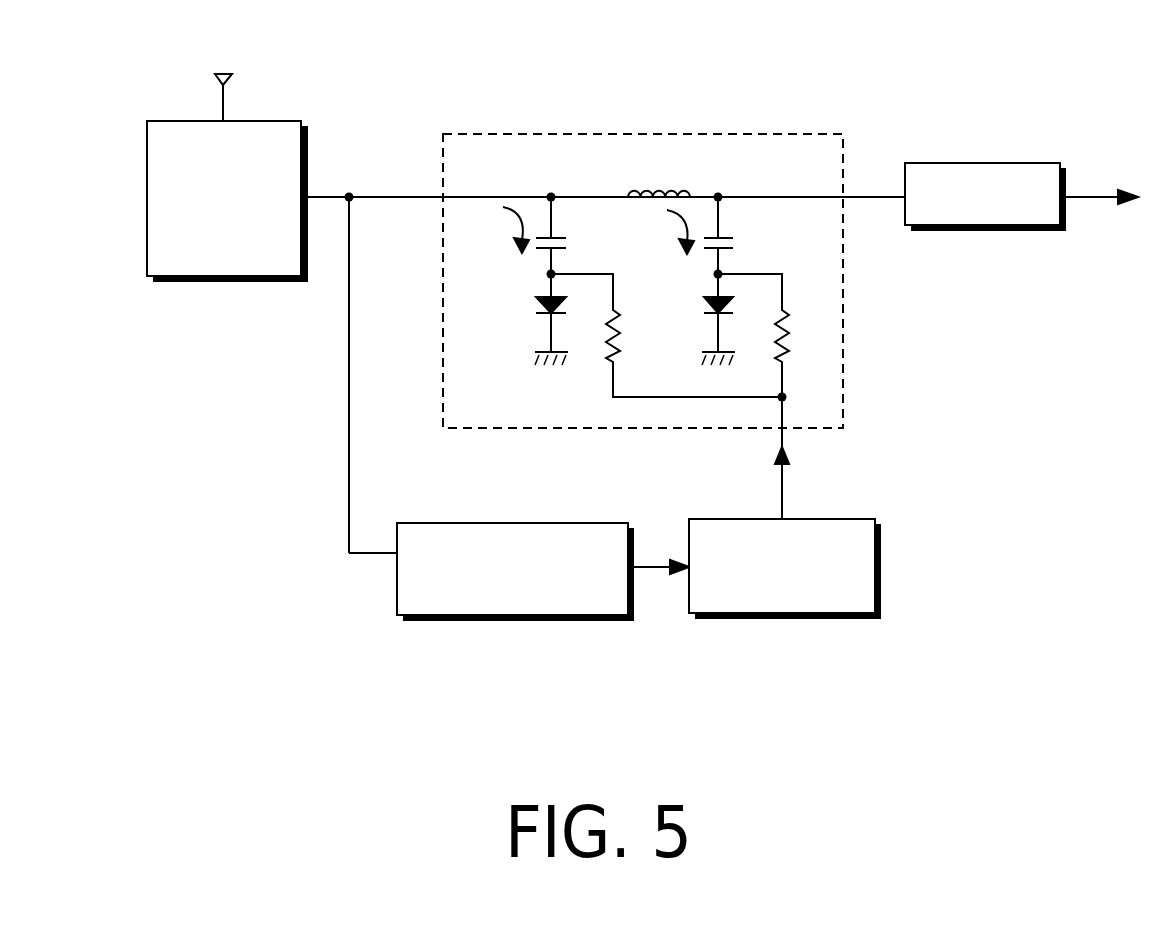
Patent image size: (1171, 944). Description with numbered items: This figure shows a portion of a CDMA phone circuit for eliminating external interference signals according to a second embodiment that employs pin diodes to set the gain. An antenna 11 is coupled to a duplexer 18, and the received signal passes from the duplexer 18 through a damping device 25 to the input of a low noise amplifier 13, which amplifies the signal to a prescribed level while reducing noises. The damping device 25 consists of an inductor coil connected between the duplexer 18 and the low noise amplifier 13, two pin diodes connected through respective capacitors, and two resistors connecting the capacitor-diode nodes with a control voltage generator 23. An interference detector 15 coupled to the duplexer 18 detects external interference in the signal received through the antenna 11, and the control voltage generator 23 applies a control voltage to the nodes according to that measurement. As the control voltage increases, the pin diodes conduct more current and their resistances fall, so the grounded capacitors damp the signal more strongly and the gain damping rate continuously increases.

The antenna 11 is at (223, 74).
The duplexer 18 is at (147, 197).
The damping device 25 is at (640, 134).
The low noise amplifier 13 is at (980, 163).
The interference detector 15 is at (510, 620).
The control voltage generator 23 is at (783, 620).